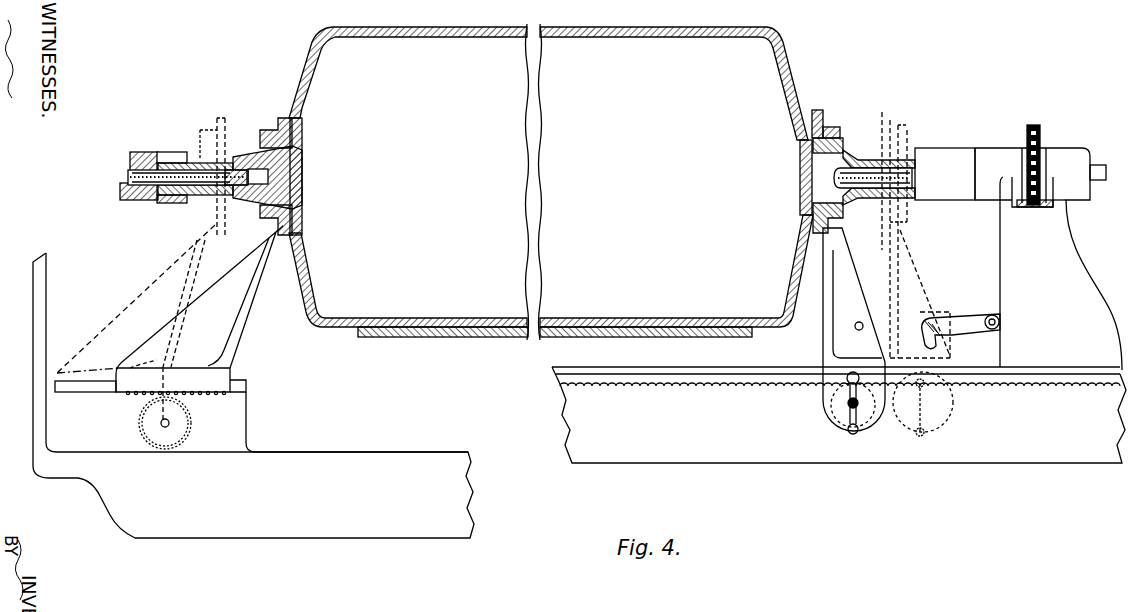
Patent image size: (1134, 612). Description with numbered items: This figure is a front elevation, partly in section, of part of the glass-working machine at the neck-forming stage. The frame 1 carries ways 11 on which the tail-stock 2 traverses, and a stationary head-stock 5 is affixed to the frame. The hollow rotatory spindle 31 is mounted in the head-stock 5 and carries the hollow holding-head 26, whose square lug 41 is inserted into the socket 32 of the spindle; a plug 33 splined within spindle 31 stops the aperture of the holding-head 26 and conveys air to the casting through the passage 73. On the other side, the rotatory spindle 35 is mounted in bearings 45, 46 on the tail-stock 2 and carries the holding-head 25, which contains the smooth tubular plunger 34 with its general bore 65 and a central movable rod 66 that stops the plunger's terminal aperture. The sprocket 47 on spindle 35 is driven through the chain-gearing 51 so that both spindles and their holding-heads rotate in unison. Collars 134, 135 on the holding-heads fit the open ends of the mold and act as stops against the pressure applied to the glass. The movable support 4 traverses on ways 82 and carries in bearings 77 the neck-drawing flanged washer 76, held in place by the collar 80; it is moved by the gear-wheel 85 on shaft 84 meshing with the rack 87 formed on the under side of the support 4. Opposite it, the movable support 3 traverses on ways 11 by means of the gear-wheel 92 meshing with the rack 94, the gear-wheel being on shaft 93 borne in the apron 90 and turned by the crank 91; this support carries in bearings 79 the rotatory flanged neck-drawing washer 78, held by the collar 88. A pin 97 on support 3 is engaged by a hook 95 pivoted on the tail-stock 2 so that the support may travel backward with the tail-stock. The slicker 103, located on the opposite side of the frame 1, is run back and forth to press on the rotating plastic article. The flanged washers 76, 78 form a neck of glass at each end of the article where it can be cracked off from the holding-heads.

The frame 1 is at (579, 452).
The tail-stock 2 is at (1048, 259).
The movable support 3 is at (854, 329).
The movable support 4 is at (222, 311).
The head-stock 5 is at (46, 316).
The ways 11 is at (690, 360).
The holding-head 25 is at (905, 150).
The holding-head 26 is at (204, 162).
The rotatory spindle 31 is at (142, 152).
The socket 32 is at (168, 152).
The plug 33 is at (122, 188).
The tubular plunger 34 is at (1097, 165).
The rotatory spindle 35 is at (945, 160).
The square lug 41 is at (165, 203).
The bearing 45 is at (988, 173).
The bearing 46 is at (1048, 175).
The sprocket 47 is at (1040, 136).
The chain-gearing 51 is at (1030, 207).
The bore 65 is at (832, 178).
The movable rod 66 is at (845, 203).
The passage 73 is at (130, 175).
The neck-drawing flanged washer 76 is at (284, 116).
The bearings 77 is at (270, 128).
The rotatory flanged neck-drawing washer 78 is at (818, 110).
The bearings 79 is at (832, 127).
The collar 80 is at (266, 210).
The ways 82 is at (240, 381).
The shaft 84 is at (169, 423).
The gear-wheel 85 is at (139, 426).
The rack 87 is at (130, 396).
The collar 88 is at (870, 158).
The apron 90 is at (846, 380).
The crank 91 is at (848, 410).
The gear-wheel 92 is at (868, 420).
The shaft 93 is at (850, 408).
The rack 94 is at (946, 404).
The hook 95 is at (968, 316).
The pin 97 is at (858, 330).
The slicker 103 is at (478, 337).
The collar 134 is at (872, 160).
The collar 135 is at (232, 126).